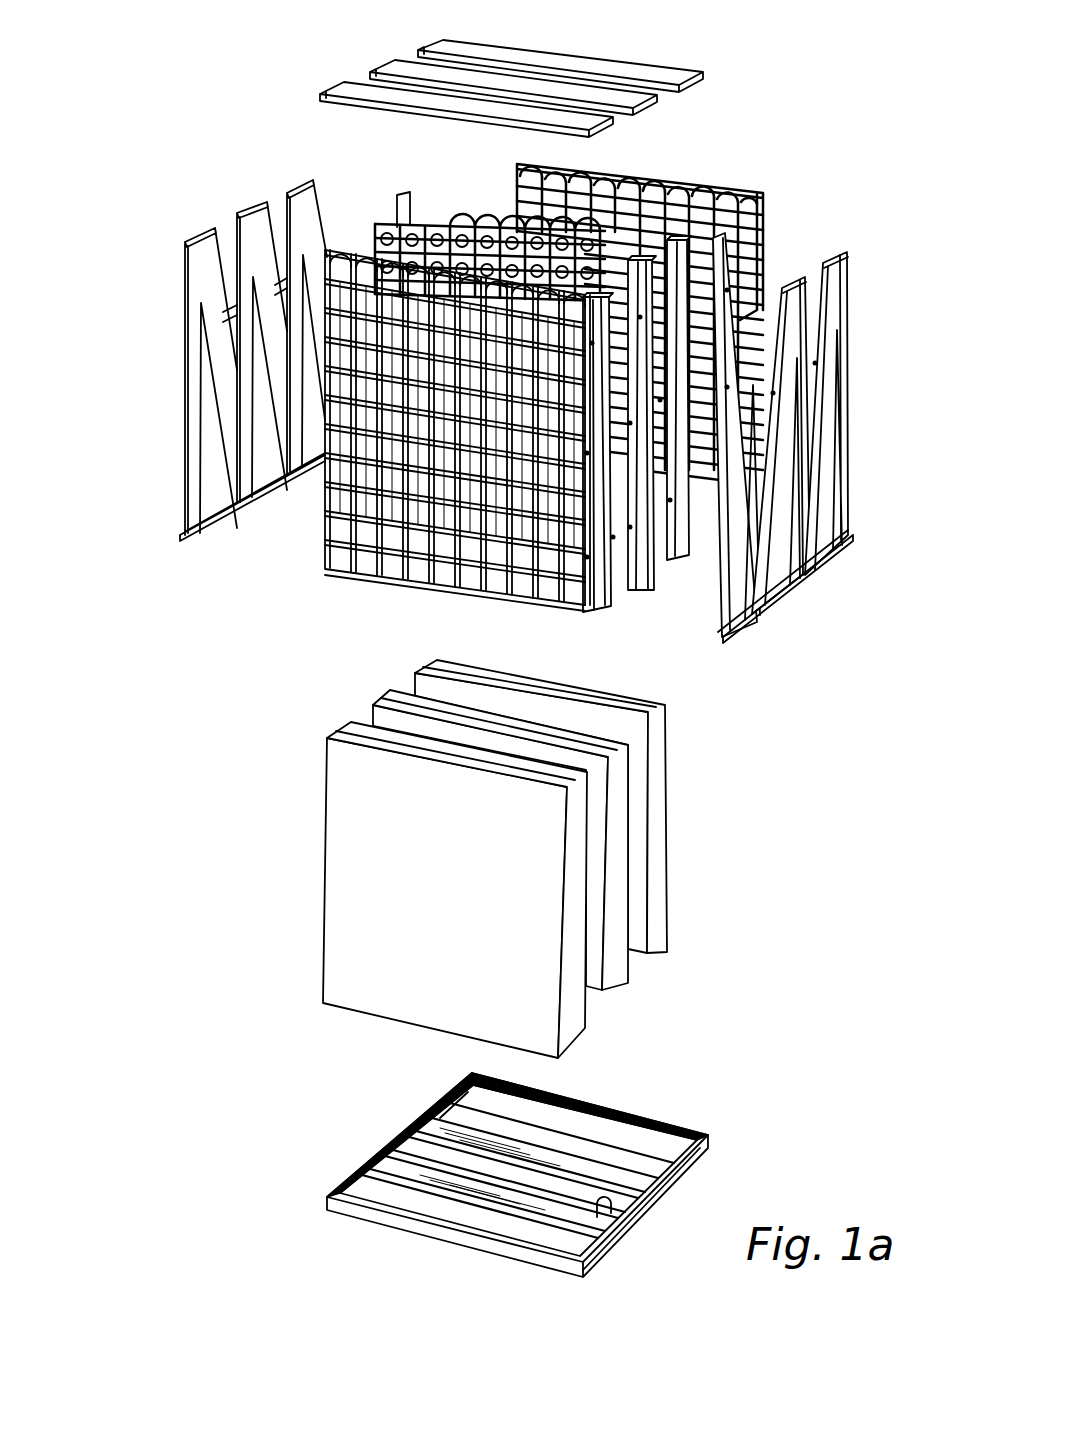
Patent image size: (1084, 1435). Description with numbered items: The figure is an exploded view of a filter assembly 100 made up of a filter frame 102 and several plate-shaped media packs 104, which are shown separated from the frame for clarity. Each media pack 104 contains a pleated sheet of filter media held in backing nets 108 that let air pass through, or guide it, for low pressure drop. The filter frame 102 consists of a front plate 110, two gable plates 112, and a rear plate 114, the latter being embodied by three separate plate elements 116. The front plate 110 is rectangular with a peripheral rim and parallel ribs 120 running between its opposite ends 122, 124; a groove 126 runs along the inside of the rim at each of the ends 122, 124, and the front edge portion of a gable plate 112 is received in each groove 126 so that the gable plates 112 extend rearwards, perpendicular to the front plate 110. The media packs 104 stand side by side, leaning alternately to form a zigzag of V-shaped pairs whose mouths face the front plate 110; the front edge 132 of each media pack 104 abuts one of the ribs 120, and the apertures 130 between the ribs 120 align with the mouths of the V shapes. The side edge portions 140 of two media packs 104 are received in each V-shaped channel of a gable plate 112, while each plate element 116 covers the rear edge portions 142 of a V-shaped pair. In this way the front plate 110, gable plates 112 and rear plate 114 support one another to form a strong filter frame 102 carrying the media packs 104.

The filter assembly 100 is at (134, 188).
The filter frame 102 is at (335, 608).
The media pack 104 is at (672, 937).
The backing net 108 is at (556, 606).
The front plate 110 is at (712, 1152).
The gable plate 112 is at (188, 378).
The rear plate 114 is at (605, 54).
The plate element 116 is at (332, 87).
The rib 120 is at (625, 1202).
The end of the front plate 122 is at (410, 1140).
The end of the front plate 124 is at (600, 1257).
The groove 126 is at (682, 1120).
The aperture 130 is at (460, 1100).
The front edge 132 is at (645, 983).
The side edge portion 140 is at (680, 777).
The rear edge portion 142 is at (637, 702).